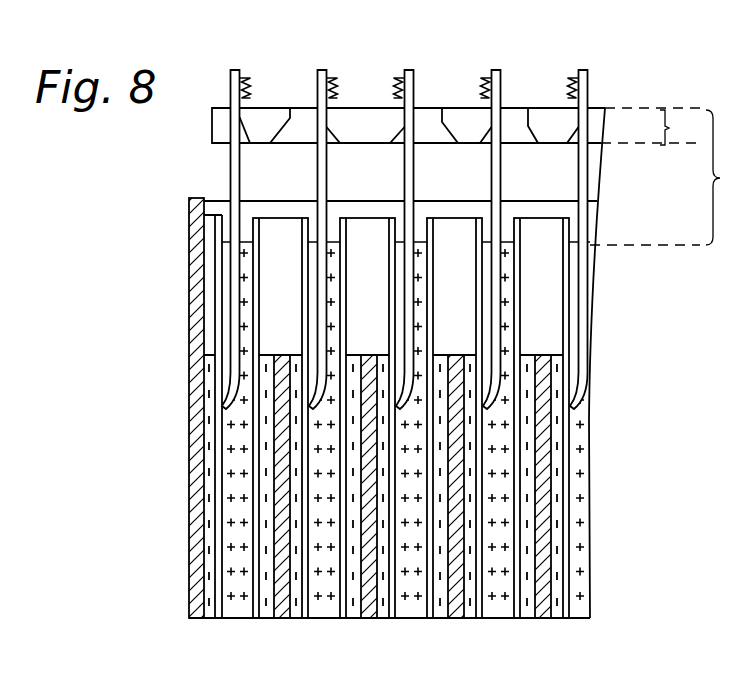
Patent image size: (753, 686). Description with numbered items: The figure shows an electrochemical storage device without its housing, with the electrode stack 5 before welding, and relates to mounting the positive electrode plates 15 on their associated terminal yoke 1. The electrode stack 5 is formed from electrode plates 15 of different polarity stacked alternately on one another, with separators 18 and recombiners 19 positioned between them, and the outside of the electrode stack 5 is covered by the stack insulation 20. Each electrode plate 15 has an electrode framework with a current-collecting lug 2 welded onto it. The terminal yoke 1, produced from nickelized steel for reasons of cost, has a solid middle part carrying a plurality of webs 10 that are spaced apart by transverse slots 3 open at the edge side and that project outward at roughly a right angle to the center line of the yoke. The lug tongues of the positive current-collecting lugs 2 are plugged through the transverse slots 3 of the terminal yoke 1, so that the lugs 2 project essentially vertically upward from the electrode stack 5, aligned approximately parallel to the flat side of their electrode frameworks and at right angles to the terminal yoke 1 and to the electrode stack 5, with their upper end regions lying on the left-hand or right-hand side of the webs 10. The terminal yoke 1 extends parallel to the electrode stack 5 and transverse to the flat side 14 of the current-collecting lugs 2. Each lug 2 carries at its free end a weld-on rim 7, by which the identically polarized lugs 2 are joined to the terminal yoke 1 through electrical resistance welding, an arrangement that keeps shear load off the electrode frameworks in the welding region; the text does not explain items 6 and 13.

The terminal yoke 1 is at (204, 126).
The current-collecting lug 2 is at (231, 180).
The transverse slot 3 is at (308, 117).
The electrode stack 5 is at (590, 630).
The cover 6 is at (433, 108).
The weld-on rim 7 is at (650, 126).
The web 10 is at (555, 122).
The spring contacts 13 is at (393, 82).
The flat side 14 is at (566, 40).
The electrode plate 15 is at (242, 253).
The separator 18 is at (222, 515).
The recombiner 19 is at (281, 410).
The stack insulation 20 is at (203, 456).